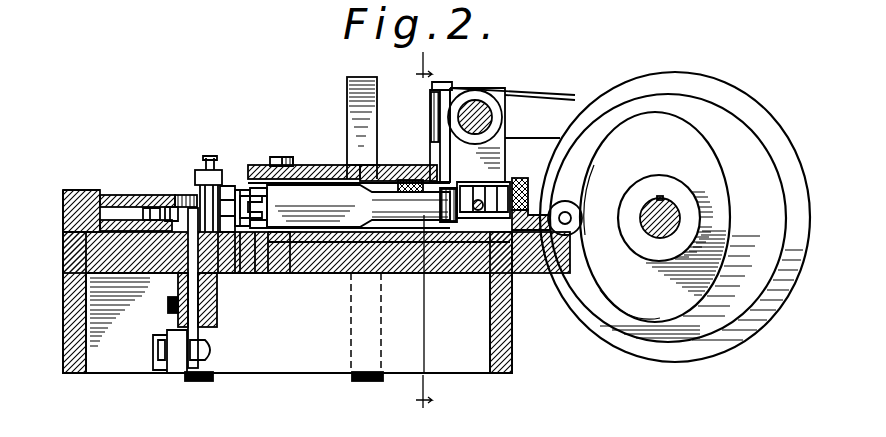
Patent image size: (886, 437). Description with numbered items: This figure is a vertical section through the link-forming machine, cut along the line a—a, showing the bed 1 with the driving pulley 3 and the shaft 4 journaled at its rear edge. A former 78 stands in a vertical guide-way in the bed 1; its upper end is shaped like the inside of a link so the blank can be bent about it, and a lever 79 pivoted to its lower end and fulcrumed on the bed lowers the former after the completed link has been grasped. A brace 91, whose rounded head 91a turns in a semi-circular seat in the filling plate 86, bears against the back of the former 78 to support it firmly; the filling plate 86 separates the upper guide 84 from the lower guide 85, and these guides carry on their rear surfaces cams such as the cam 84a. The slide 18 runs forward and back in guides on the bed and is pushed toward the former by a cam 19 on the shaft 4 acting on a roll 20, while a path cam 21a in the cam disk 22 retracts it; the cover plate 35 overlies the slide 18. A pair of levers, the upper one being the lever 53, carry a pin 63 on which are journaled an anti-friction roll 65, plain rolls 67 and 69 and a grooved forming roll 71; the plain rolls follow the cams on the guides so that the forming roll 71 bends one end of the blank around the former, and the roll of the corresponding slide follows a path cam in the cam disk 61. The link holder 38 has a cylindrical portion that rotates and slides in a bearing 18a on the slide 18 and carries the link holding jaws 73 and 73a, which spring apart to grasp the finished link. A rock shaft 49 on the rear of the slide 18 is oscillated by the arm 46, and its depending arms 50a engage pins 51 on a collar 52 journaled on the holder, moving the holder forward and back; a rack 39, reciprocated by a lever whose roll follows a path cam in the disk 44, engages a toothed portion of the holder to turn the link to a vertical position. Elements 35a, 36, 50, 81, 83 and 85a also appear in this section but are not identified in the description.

The bed 1 is at (447, 276).
The driving pulley 3 is at (424, 230).
The shaft 4 is at (641, 218).
The slide 18 is at (322, 275).
The bearing 18a is at (313, 183).
The cam 19 is at (692, 173).
The roll 20 is at (565, 201).
The path cam 21a is at (692, 146).
The cam disk 22 is at (648, 93).
The cover plate 35 is at (382, 167).
The bracket 35a is at (430, 103).
The block 36 is at (283, 157).
The link holder 38 is at (405, 283).
The rack 39 is at (368, 164).
The disk 44 is at (347, 102).
The arm 46 is at (541, 93).
The rock shaft 49 is at (510, 93).
The post 50 is at (468, 90).
The depending arms 50a is at (500, 141).
The pins 51 is at (481, 203).
The collar 52 is at (472, 182).
The upper lever 53 is at (251, 200).
The cam disk 61 is at (698, 80).
The pin 63 is at (212, 170).
The anti-friction roll 65 is at (228, 195).
The plain roll 67 is at (236, 200).
The plain roll 69 is at (245, 275).
The grooved forming roll 71 is at (228, 275).
The link holding jaw 73 is at (276, 205).
The link holding jaw 73a is at (283, 276).
The former 78 is at (195, 292).
The lever 79 is at (175, 368).
The spring 81 is at (213, 350).
The stem 83 is at (210, 156).
The upper guide 84 is at (100, 195).
The cam 84a is at (187, 195).
The lower guide 85 is at (173, 222).
The wall 85a is at (85, 277).
The filling plate 86 is at (63, 202).
The brace 91 is at (180, 195).
The rounded head 91a is at (141, 195).